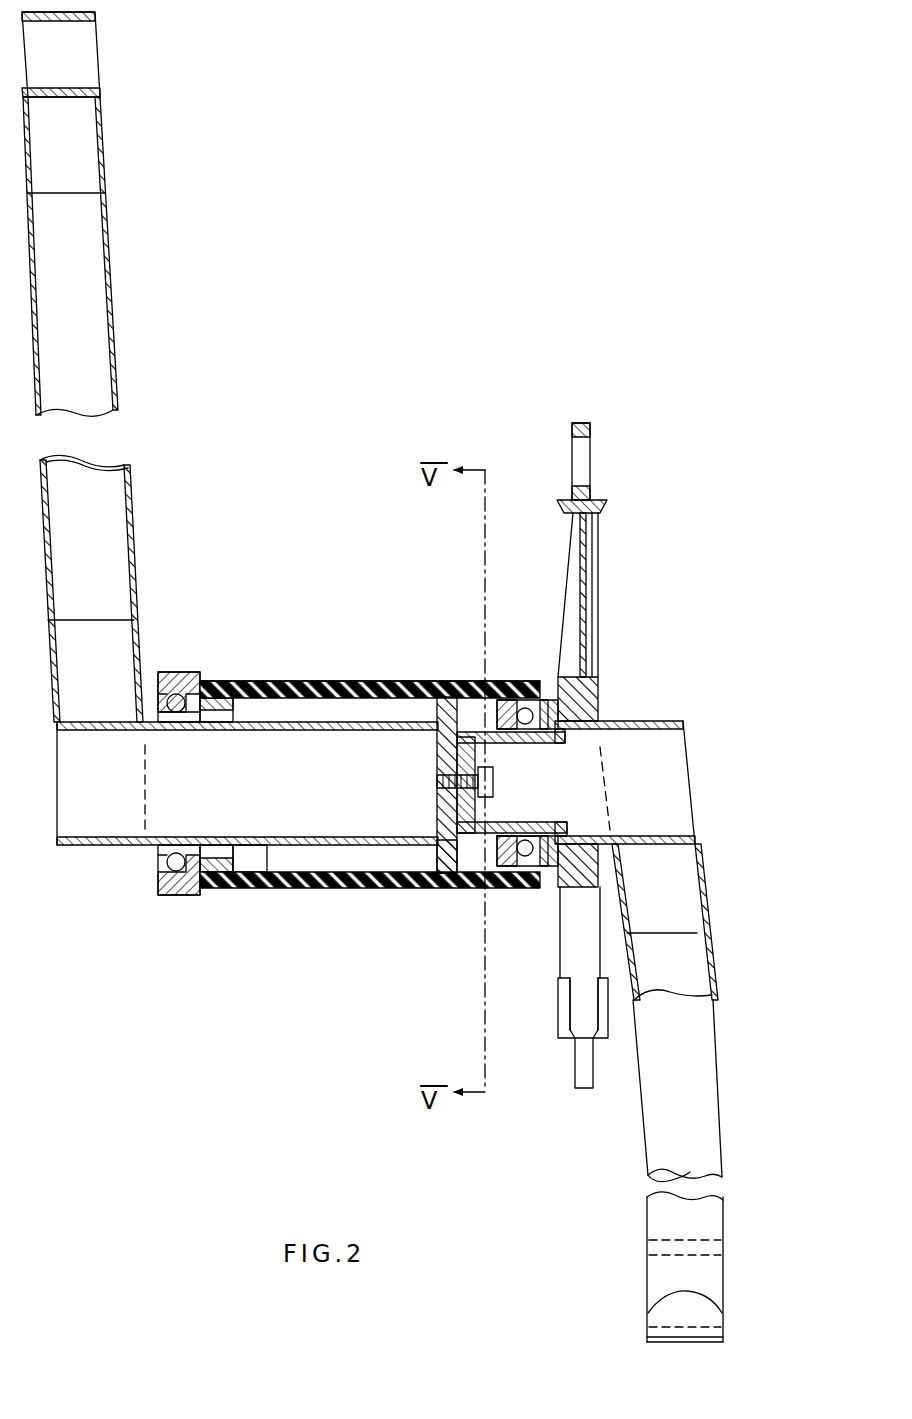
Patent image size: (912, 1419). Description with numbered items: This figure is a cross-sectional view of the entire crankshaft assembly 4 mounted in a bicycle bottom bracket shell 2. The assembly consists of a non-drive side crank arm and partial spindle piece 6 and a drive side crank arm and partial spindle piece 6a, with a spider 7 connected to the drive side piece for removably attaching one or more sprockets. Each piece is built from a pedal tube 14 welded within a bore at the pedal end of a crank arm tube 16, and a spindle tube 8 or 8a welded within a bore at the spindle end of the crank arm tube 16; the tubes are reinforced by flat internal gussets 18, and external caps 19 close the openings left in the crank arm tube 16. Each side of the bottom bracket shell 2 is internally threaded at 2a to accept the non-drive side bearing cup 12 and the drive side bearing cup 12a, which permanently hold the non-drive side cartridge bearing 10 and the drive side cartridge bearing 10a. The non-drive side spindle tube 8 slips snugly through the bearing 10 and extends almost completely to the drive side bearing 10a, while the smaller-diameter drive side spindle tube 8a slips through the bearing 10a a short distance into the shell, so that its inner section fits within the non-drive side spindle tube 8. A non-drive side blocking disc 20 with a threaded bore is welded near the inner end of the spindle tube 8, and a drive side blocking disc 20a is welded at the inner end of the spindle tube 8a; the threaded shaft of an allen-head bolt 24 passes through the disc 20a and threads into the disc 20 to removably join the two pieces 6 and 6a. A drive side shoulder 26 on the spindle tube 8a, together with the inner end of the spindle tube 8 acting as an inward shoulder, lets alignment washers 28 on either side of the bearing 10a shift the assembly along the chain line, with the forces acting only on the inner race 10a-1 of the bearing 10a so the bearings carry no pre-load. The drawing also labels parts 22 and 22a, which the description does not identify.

The bottom bracket shell 2 is at (270, 682).
The internal threads of the bottom bracket shell 2a is at (237, 685).
The crankshaft assembly 4 is at (689, 780).
The non-drive side crank arm and partial spindle piece 6 is at (136, 564).
The drive side crank arm and partial spindle piece 6a is at (704, 905).
The spider 7 is at (600, 597).
The non-drive side spindle tube 8 is at (270, 888).
The drive side spindle tube 8a is at (630, 721).
The non-drive side cartridge bearing 10 is at (168, 672).
The drive side cartridge bearing 10a is at (527, 866).
The inner race 10a-1 is at (470, 888).
The non-drive side bearing cup 12 is at (192, 678).
The drive side bearing cup 12a is at (493, 862).
The pedal tube 14 is at (100, 92).
The crank arm tube 16 is at (115, 312).
The internal gusset 18 is at (90, 175).
The external cap 19 is at (705, 1300).
The non-drive side blocking disc 20 is at (437, 740).
The drive side blocking disc 20a is at (472, 808).
The flange 22 is at (446, 715).
The flange lower part 22a is at (420, 888).
The allen-head bolt 24 is at (436, 781).
The drive side shoulder 26 is at (560, 905).
The alignment washers 28 is at (545, 680).